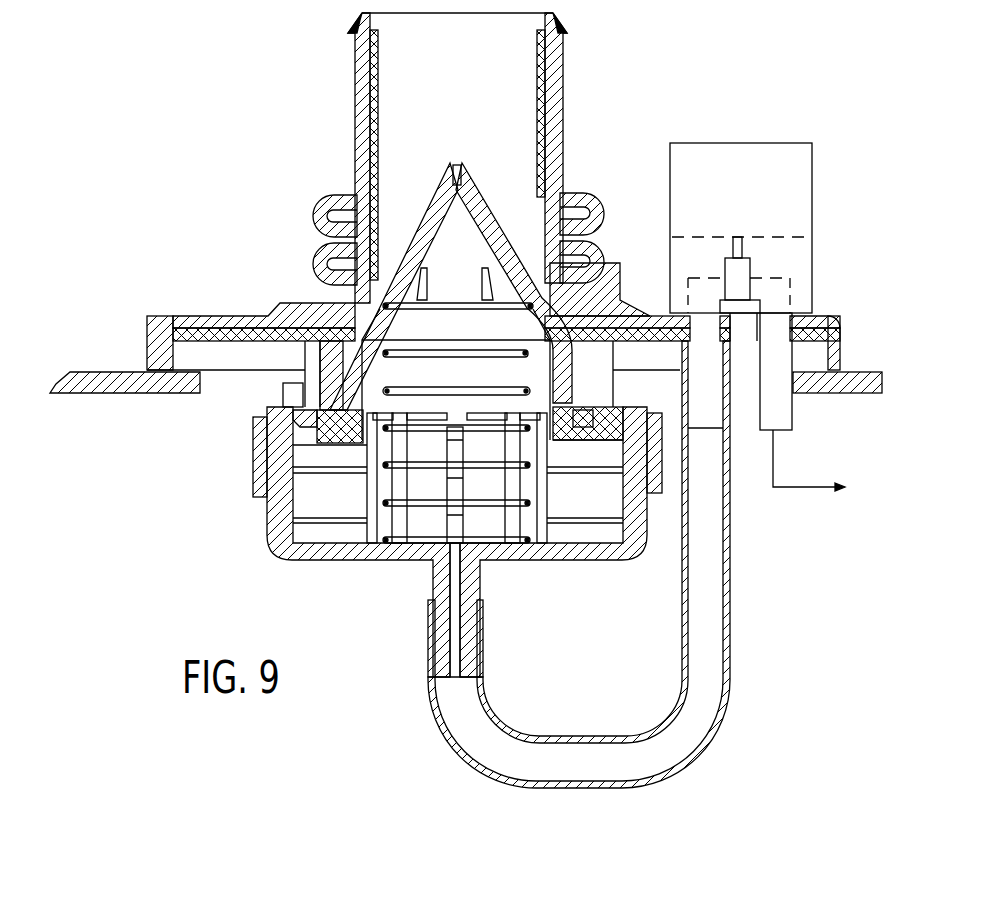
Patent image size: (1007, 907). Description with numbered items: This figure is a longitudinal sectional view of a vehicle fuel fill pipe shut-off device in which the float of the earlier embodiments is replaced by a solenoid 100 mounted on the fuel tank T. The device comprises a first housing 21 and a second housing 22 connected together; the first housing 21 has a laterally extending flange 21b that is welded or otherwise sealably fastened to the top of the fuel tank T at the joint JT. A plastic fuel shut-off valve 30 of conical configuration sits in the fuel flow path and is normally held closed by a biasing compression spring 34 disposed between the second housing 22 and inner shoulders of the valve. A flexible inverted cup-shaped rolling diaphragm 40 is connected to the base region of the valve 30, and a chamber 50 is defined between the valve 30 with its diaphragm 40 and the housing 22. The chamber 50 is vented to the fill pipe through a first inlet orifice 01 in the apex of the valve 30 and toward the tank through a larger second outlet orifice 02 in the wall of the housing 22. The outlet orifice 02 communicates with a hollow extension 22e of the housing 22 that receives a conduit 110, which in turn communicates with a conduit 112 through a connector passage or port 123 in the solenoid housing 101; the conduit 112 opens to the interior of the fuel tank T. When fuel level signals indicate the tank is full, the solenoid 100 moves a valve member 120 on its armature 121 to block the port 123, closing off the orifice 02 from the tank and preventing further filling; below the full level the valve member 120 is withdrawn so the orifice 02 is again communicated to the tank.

The first housing 21 is at (353, 108).
The laterally extending flange 21b is at (150, 316).
The fuel tank T is at (100, 372).
The joint JT is at (160, 393).
The fuel shut-off valve 30 is at (433, 185).
The first inlet orifice 01 is at (457, 165).
The biasing compression spring 34 is at (421, 500).
The flexible inverted cup-shaped rolling diaphragm 40 is at (302, 444).
The chamber 50 is at (318, 512).
The second housing 22 is at (362, 568).
The second outlet orifice 02 is at (455, 585).
The hollow extension 22e is at (468, 652).
The conduit 110 is at (730, 705).
The solenoid 100 is at (733, 170).
The solenoid housing 101 is at (672, 265).
The solenoid armature 121 is at (745, 240).
The valve member 120 is at (745, 272).
The connector passage or port 123 is at (795, 284).
The conduit 112 is at (790, 422).